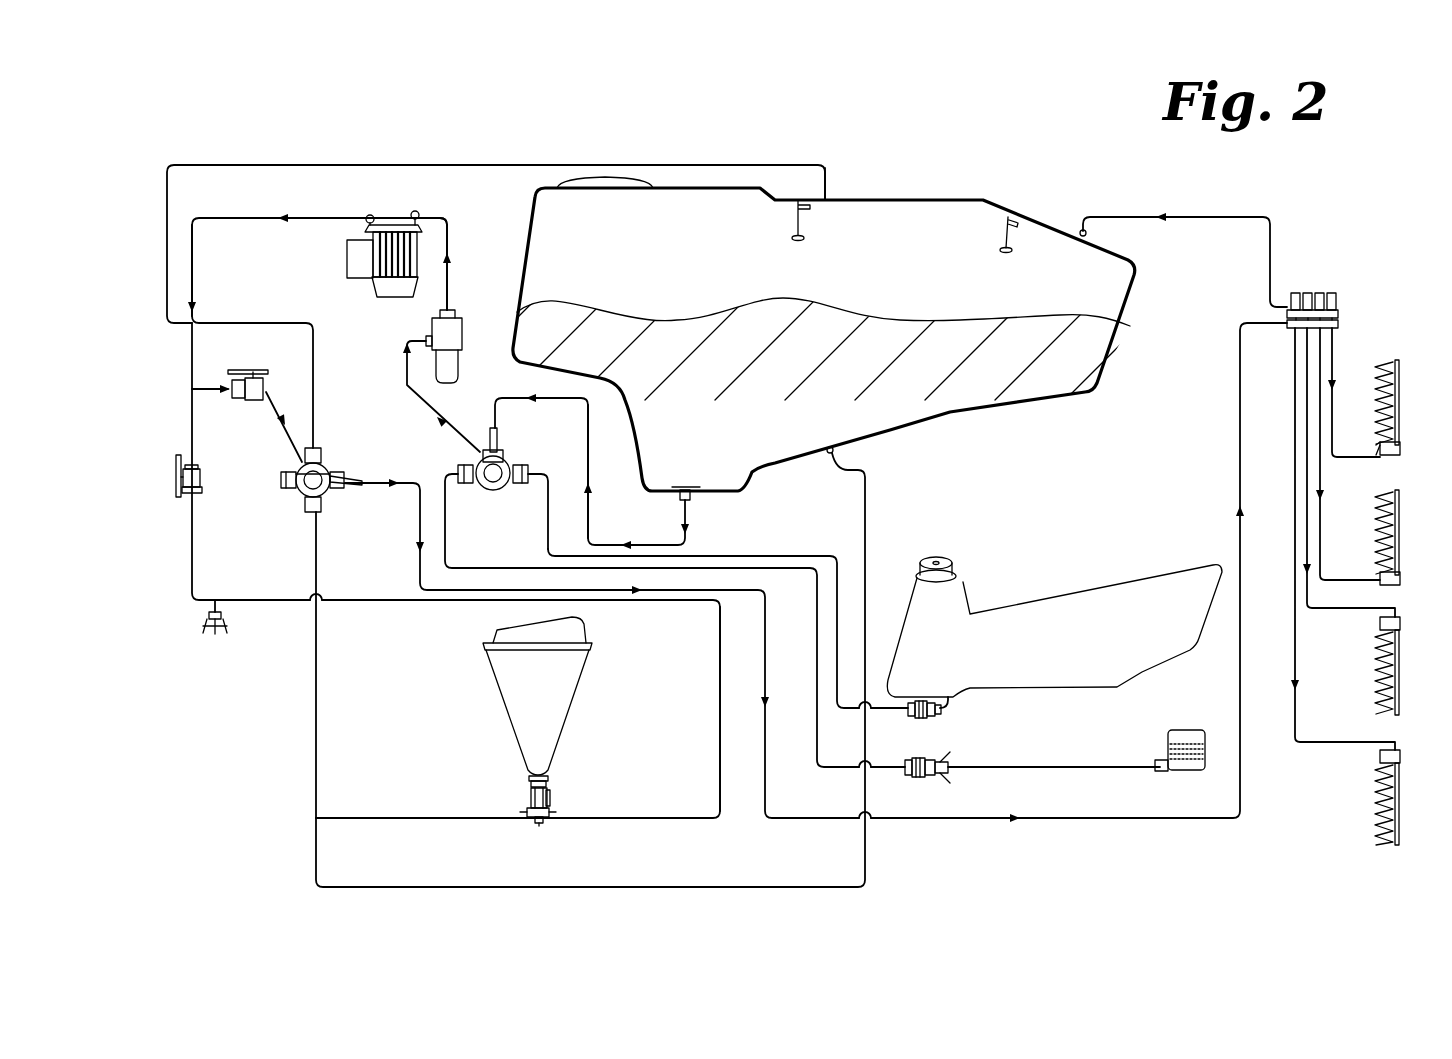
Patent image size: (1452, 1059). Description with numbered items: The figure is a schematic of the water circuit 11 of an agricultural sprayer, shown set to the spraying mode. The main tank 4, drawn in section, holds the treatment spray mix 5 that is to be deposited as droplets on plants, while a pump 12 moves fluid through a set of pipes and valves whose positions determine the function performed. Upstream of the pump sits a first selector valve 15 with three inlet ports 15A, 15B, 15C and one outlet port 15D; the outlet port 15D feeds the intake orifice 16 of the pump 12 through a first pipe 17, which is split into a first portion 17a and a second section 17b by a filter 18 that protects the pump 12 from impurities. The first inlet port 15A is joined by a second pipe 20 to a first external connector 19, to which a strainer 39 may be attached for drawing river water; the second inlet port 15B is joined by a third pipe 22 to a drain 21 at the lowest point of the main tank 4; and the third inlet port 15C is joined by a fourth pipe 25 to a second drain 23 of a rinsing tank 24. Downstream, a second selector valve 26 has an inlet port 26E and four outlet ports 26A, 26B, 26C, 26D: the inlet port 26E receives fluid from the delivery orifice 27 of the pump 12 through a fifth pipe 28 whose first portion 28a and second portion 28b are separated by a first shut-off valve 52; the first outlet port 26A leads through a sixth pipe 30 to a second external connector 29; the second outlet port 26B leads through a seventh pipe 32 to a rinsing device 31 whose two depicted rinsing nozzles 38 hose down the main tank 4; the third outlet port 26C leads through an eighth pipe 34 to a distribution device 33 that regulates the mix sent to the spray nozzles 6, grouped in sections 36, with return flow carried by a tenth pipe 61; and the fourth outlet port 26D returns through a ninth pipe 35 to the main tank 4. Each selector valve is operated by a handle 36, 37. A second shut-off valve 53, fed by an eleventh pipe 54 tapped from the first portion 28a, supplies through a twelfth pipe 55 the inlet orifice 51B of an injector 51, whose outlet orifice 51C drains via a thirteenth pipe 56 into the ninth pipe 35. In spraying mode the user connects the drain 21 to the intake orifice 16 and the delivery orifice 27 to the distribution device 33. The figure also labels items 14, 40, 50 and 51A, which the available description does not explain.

The main tank 4 is at (527, 268).
The treatment spray mix 5 is at (1126, 303).
The spray nozzles 6 is at (1380, 363).
The water circuit 11 is at (1064, 489).
The pump 12 is at (347, 273).
The chemical induction assembly 14 is at (505, 745).
The first selector valve 15 is at (542, 479).
The first inlet port 15A is at (462, 470).
The second inlet port 15B is at (507, 433).
The third inlet port 15C is at (537, 500).
The outlet port 15D is at (482, 455).
The intake orifice 16 is at (422, 212).
The first pipe 17 is at (447, 207).
The first portion 17a is at (408, 330).
The second section 17b is at (452, 238).
The filter 18 is at (463, 368).
The first external connector 19 is at (912, 775).
The second pipe 20 is at (812, 712).
The drain 21 is at (692, 497).
The third pipe 22 is at (588, 420).
The second drain 23 is at (943, 700).
The rinsing tank 24 is at (1073, 593).
The fourth pipe 25 is at (772, 554).
The second selector valve 26 is at (313, 486).
The first outlet port 26A is at (288, 488).
The second outlet port 26B is at (318, 445).
The third outlet port 26C is at (345, 489).
The fourth outlet port 26D is at (312, 517).
The inlet port 26E is at (295, 470).
The delivery orifice 27 is at (368, 210).
The fifth pipe 28 is at (195, 215).
The first portion 28a is at (192, 253).
The second portion 28b is at (284, 436).
The second external connector 29 is at (216, 645).
The sixth pipe 30 is at (218, 613).
The rinsing device 31 is at (960, 177).
The seventh pipe 32 is at (552, 153).
The distribution device 33 is at (1342, 313).
The eighth pipe 34 is at (1065, 818).
The ninth pipe 35 is at (317, 633).
The handle 36 is at (497, 430).
The handle 37 is at (352, 478).
The rinsing nozzles 38 is at (793, 210).
The strainer 39 is at (1047, 767).
The hopper 40 is at (577, 713).
The hopper valve 50 is at (550, 795).
The injector 51 is at (555, 811).
The tee port 51A is at (528, 810).
The inlet orifice 51B is at (550, 812).
The outlet orifice 51C is at (528, 822).
The first shut-off valve 52 is at (253, 365).
The second shut-off valve 53 is at (178, 488).
The eleventh pipe 54 is at (178, 456).
The twelfth pipe 55 is at (720, 693).
The thirteenth pipe 56 is at (448, 819).
The tenth pipe 61 is at (1228, 215).